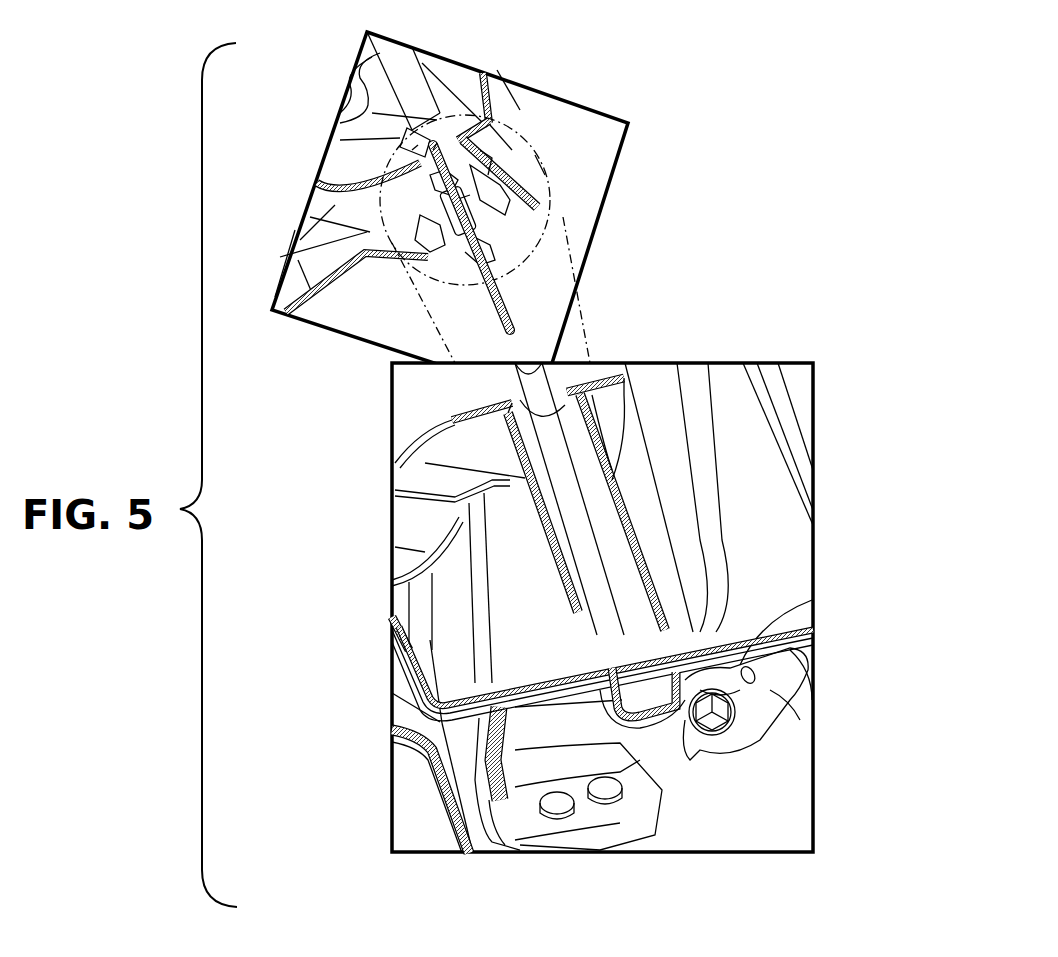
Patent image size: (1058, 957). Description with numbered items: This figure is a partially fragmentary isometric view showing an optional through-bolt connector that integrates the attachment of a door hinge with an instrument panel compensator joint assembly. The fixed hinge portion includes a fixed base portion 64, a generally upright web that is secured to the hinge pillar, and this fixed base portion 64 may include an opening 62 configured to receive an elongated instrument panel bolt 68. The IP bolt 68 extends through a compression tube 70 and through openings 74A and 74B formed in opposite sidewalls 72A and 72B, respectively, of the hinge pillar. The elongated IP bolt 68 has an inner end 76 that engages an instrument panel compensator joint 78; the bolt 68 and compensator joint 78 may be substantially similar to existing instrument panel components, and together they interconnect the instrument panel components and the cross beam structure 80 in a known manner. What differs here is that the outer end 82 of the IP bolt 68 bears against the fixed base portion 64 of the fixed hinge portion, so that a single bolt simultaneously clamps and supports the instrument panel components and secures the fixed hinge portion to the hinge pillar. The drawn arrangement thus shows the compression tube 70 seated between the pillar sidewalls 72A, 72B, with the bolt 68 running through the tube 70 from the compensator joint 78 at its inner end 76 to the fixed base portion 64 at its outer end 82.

The opening 62 is at (775, 690).
The fixed base portion 64 is at (772, 682).
The instrument panel bolt 68 is at (652, 713).
The compression tube 70 is at (607, 533).
The sidewall 72A is at (760, 632).
The sidewall 72B is at (597, 392).
The opening 74A is at (670, 617).
The opening 74B is at (567, 423).
The inner end 76 is at (503, 243).
The instrument panel compensator joint 78 is at (516, 178).
The cross beam structure 80 is at (555, 222).
The outer end 82 is at (690, 717).